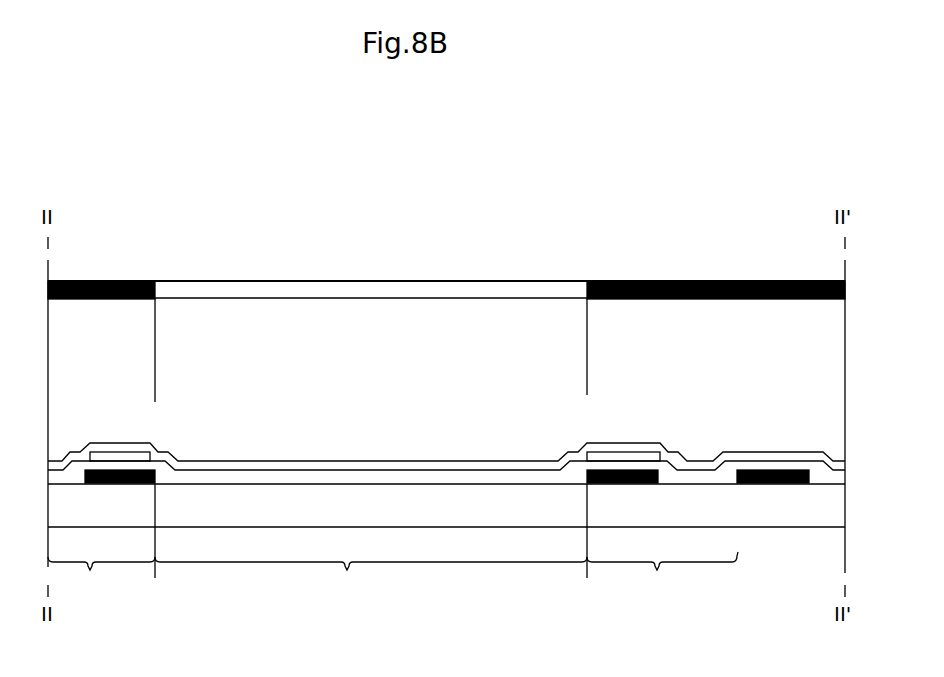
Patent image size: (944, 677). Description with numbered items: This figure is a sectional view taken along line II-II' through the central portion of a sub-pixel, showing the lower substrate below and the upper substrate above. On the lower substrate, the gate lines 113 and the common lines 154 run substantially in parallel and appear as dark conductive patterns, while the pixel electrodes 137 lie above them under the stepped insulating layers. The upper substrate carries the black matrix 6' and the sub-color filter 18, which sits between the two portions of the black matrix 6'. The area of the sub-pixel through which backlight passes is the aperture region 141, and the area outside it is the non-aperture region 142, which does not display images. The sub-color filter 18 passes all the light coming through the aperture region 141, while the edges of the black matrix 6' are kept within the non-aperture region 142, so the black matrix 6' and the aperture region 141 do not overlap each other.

The black matrix 6' is at (446, 249).
The sub-color filter 18 is at (288, 292).
The pixel electrode 137 is at (623, 457).
The common line 154 is at (121, 484).
The gate line 113 is at (777, 484).
The aperture region 141 is at (371, 578).
The non-aperture region 142 is at (393, 575).